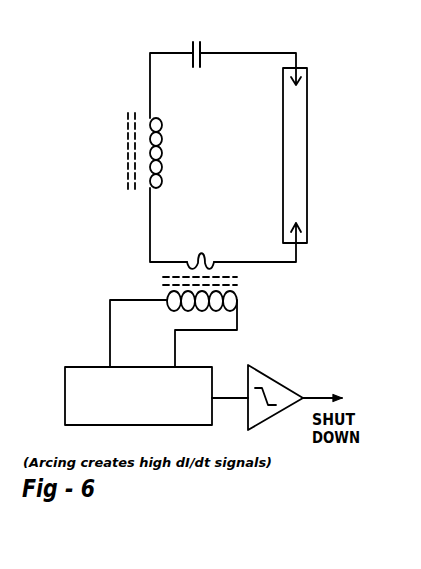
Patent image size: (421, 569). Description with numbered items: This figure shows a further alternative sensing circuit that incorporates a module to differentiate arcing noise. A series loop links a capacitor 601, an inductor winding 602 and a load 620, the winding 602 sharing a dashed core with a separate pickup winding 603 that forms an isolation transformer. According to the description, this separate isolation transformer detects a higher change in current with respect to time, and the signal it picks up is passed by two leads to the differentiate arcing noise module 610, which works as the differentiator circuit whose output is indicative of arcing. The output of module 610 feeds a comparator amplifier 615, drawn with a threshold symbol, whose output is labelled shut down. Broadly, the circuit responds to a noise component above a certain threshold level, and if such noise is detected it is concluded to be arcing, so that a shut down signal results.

The capacitor 601 is at (196, 40).
The inductor with core 602 is at (117, 153).
The pickup coil with core 603 is at (230, 291).
The load 620 is at (330, 155).
The differentiate arcing noise block 610 is at (138, 410).
The comparator amplifier 615 is at (277, 394).